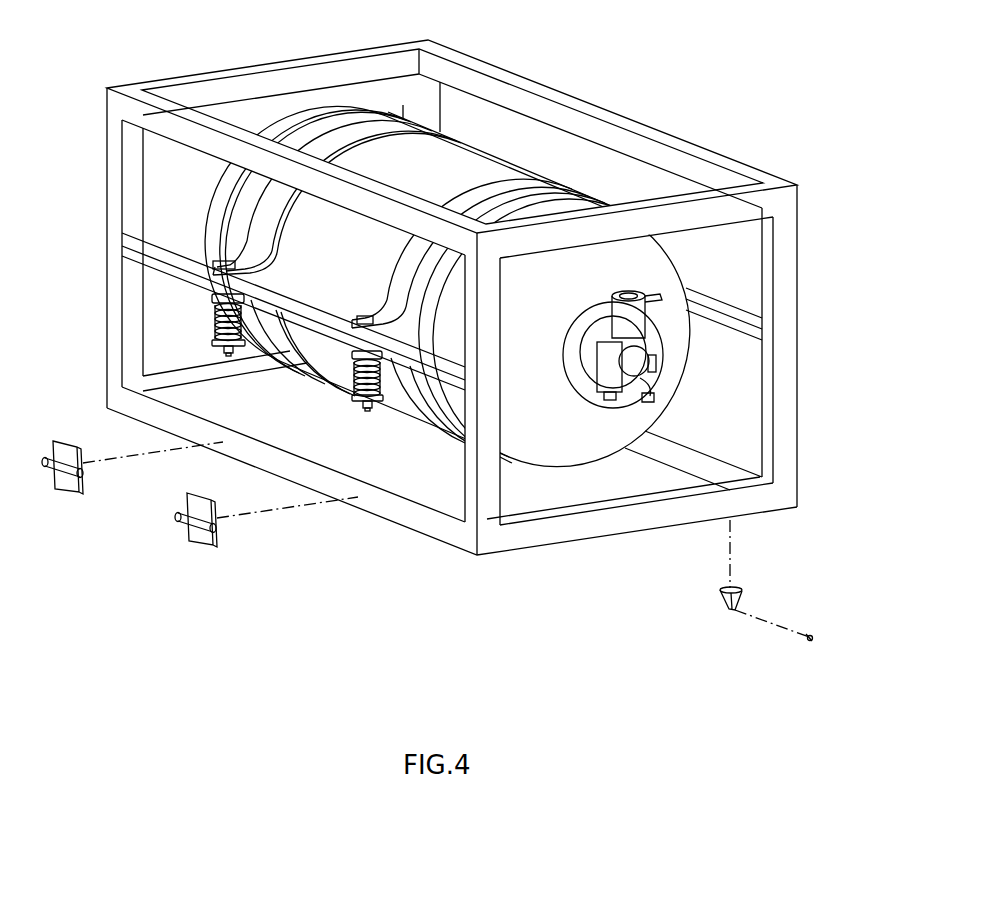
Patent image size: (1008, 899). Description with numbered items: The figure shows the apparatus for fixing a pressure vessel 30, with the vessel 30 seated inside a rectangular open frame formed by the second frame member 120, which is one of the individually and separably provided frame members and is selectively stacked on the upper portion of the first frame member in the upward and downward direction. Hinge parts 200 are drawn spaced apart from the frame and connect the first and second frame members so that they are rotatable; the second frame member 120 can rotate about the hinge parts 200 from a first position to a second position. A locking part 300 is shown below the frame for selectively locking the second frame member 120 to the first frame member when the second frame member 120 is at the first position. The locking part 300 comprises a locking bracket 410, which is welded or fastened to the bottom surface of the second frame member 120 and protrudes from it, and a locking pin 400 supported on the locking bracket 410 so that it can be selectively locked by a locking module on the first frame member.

The pressure vessel 30 is at (463, 165).
The second frame member 120 is at (793, 240).
The hinge parts 200 is at (201, 535).
The locking part 300 is at (749, 586).
The locking pin 400 is at (808, 637).
The locking bracket 410 is at (722, 593).